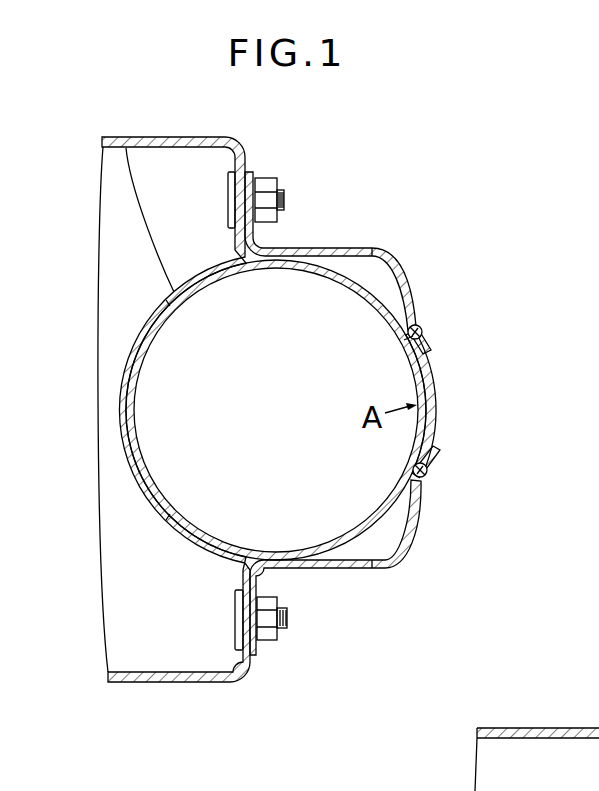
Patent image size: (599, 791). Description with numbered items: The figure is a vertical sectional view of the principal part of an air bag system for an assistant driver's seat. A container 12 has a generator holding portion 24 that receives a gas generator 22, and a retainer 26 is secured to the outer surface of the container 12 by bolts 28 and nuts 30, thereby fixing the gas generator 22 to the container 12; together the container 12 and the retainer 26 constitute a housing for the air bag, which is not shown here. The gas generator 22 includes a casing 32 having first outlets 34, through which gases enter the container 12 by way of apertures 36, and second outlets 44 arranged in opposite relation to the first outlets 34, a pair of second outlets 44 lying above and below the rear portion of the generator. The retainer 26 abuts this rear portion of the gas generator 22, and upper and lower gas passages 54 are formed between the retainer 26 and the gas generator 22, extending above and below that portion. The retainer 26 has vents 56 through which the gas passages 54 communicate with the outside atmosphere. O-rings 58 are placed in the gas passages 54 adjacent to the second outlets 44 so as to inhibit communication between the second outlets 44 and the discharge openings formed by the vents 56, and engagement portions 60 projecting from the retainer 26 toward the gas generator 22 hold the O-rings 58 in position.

The container 12 is at (213, 684).
The gas generator 22 is at (417, 547).
The generator holding portion 24 is at (127, 146).
The retainer 26 is at (418, 526).
The bolts 28 is at (283, 197).
The nut 30 is at (259, 178).
The casing 32 is at (181, 533).
The first outlets 34 is at (143, 363).
The apertures 36 is at (125, 352).
The second outlets 44 is at (411, 352).
The gas passages 54 is at (363, 284).
The vents 56 is at (388, 260).
The O-rings 58 is at (424, 333).
The engagement portions 60 is at (424, 322).